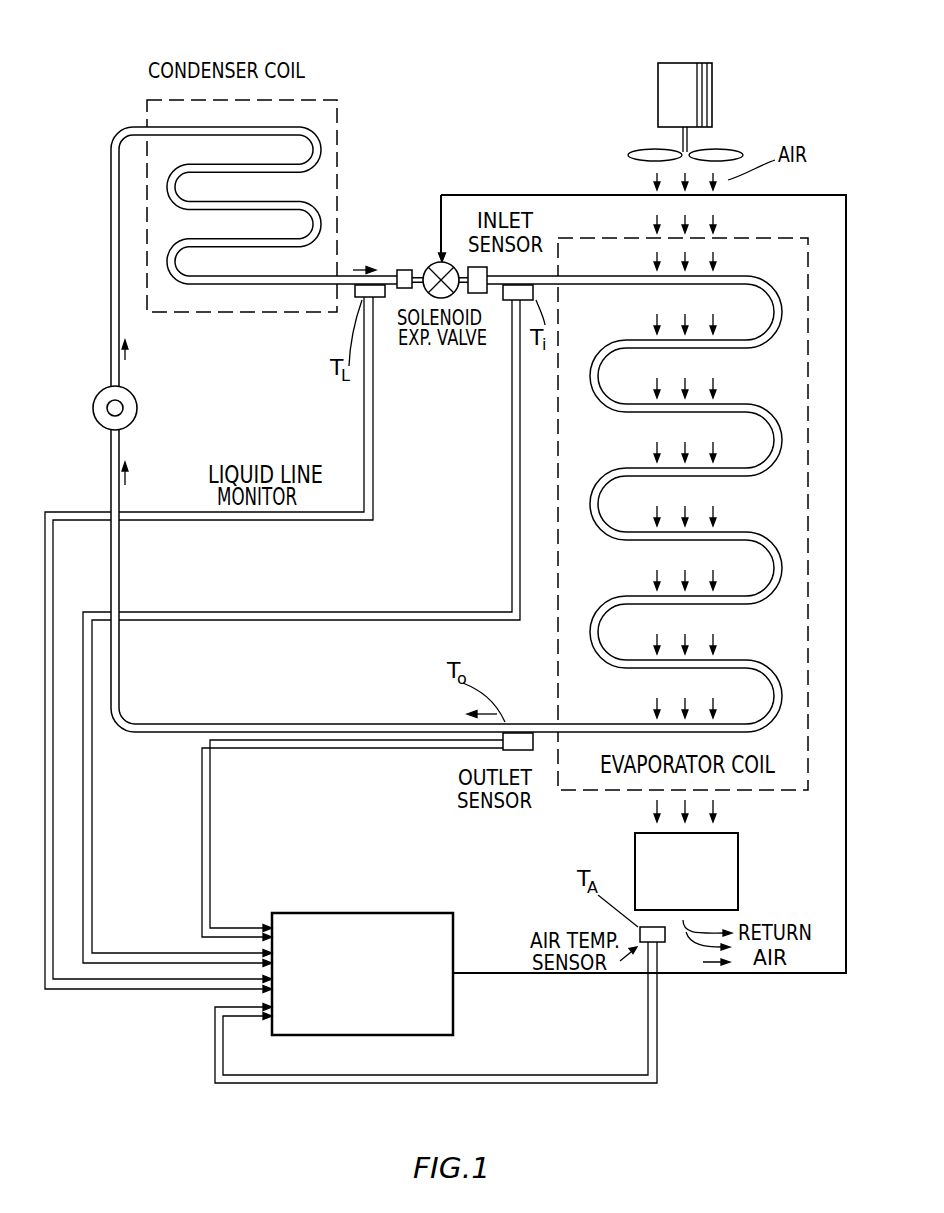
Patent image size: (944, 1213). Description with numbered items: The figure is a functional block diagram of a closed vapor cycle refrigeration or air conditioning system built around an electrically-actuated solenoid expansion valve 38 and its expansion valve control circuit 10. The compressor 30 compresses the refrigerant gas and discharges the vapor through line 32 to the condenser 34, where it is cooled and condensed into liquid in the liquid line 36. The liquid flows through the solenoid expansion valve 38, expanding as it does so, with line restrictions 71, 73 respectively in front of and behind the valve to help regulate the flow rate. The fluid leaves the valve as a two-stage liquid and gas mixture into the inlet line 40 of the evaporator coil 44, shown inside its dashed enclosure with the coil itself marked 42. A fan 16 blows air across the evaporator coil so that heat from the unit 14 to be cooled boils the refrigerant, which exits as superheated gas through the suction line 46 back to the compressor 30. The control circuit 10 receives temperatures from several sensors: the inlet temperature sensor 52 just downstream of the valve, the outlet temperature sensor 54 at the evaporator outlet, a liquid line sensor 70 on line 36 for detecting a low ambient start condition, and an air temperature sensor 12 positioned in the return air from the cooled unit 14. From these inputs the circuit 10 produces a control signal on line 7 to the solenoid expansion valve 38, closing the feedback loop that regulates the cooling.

The control signal line 7 is at (810, 975).
The expansion valve control circuit 10 is at (362, 913).
The air temperature sensor 12 is at (640, 932).
The unit to be cooled 14 is at (738, 846).
The fan 16 is at (712, 88).
The compressor 30 is at (137, 397).
The discharge line 32 is at (112, 305).
The condenser 34 is at (262, 313).
The liquid line 36 is at (353, 295).
The solenoid expansion valve 38 is at (433, 265).
The inlet line 40 is at (512, 283).
The evaporator coil 42 is at (732, 276).
The evaporator coil 44 is at (738, 238).
The suction line 46 is at (542, 722).
The inlet temperature sensor 52 is at (510, 302).
The outlet temperature sensor 54 is at (503, 748).
The liquid temperature sensor 70 is at (376, 300).
The line restriction 71 is at (397, 273).
The line restriction 73 is at (467, 267).